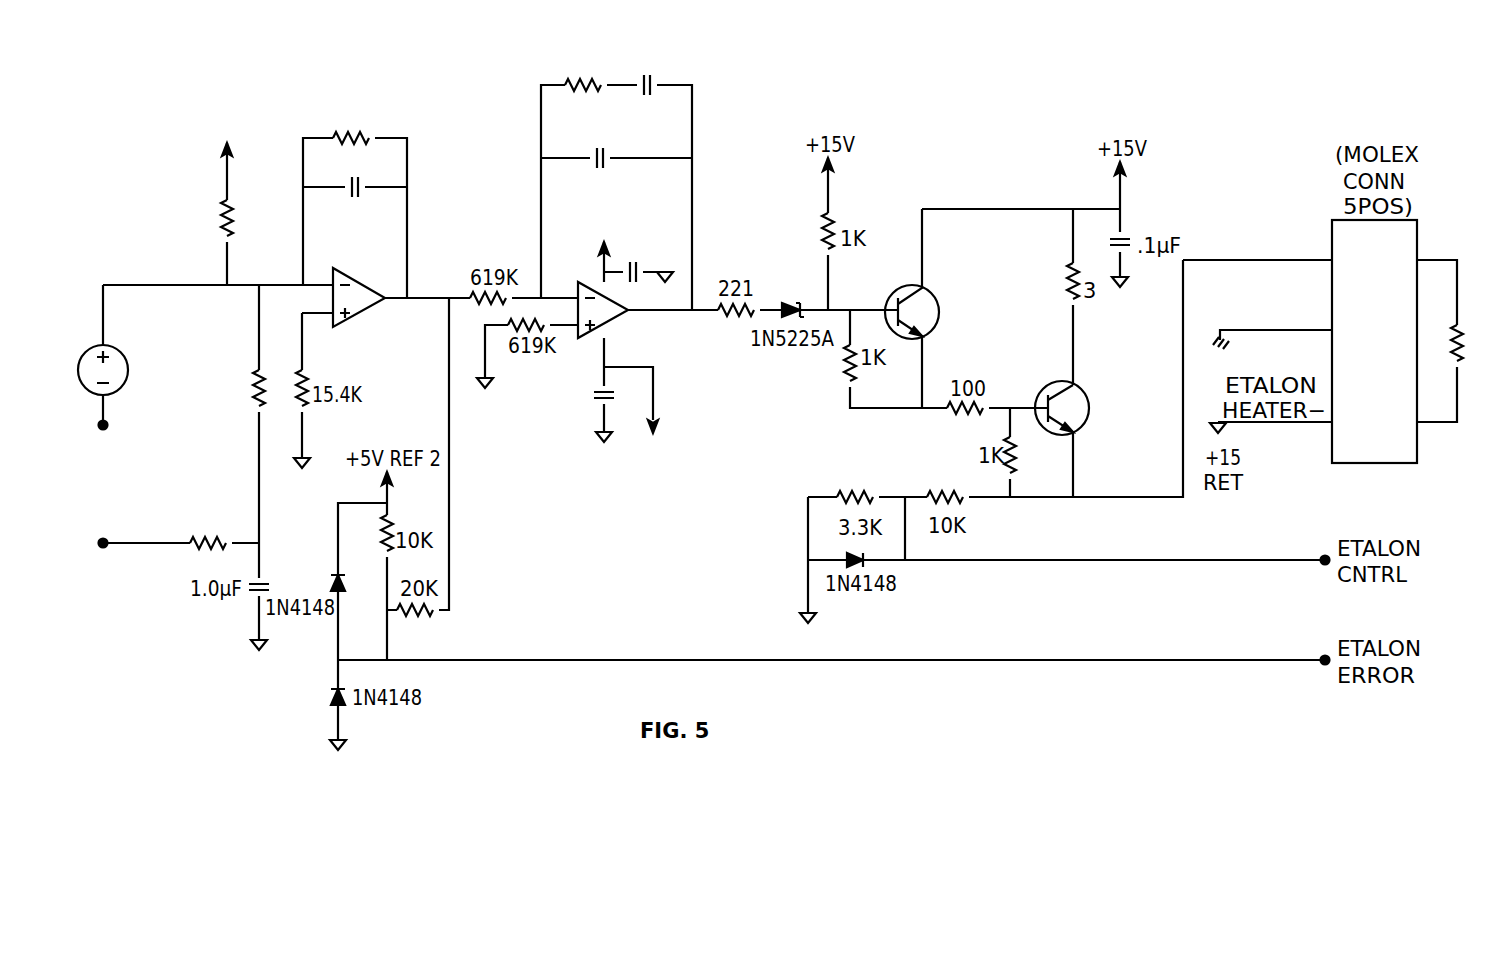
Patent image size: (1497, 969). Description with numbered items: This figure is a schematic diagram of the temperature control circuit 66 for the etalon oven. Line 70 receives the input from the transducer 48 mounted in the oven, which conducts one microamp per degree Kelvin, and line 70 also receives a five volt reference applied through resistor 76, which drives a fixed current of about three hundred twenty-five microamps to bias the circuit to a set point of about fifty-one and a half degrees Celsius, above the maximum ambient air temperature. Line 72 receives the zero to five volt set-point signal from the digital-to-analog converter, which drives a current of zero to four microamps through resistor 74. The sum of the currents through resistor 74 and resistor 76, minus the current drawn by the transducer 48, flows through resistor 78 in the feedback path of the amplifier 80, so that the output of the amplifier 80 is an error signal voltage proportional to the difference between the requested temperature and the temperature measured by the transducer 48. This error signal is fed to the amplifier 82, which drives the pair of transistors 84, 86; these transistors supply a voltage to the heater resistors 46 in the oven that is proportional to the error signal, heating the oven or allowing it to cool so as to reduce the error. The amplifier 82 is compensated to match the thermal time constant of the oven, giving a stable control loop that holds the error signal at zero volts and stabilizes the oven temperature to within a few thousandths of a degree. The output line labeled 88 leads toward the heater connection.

The heater resistors 46 is at (1457, 325).
The transducer 48 is at (120, 392).
The temperature control circuit 66 is at (287, 693).
The line 70 is at (133, 288).
The line 72 is at (148, 548).
The resistor 74 is at (234, 414).
The resistor 76 is at (219, 223).
The resistor 78 is at (370, 138).
The amplifier 80 is at (360, 318).
The amplifier 82 is at (612, 320).
The transistor 84 is at (905, 292).
The transistor 86 is at (1052, 383).
The etalon heater drive output 88 is at (1213, 262).